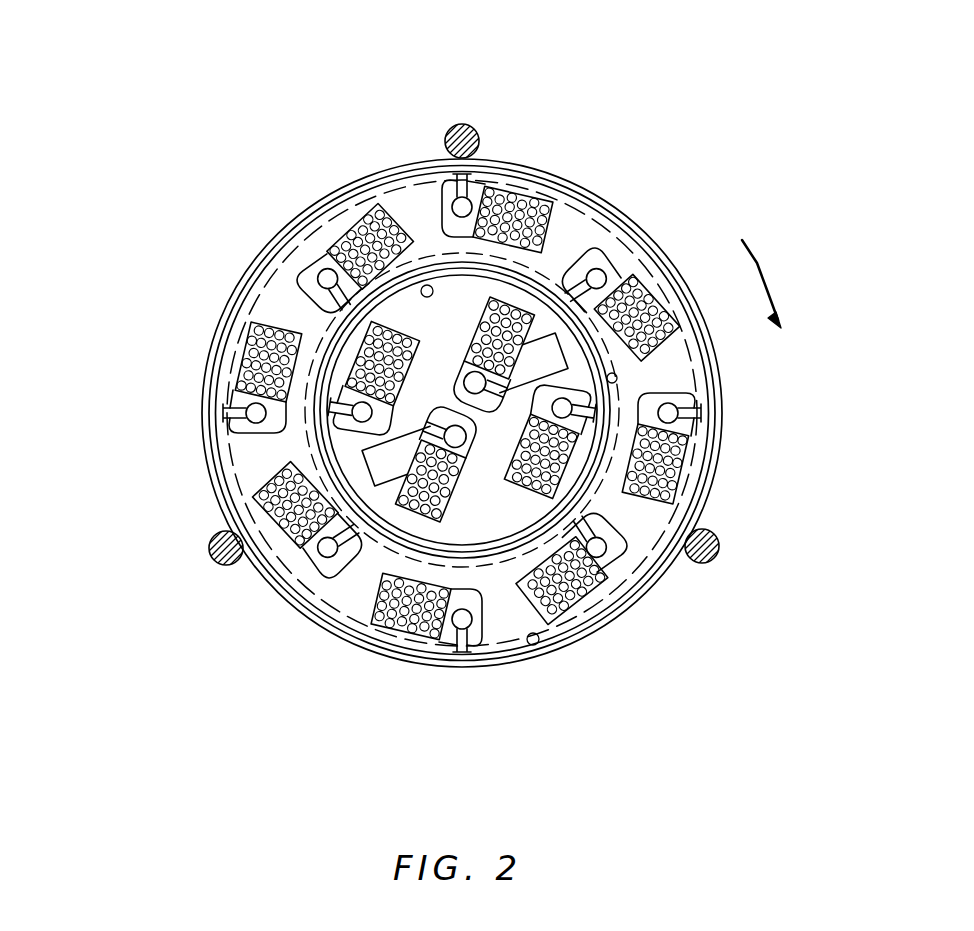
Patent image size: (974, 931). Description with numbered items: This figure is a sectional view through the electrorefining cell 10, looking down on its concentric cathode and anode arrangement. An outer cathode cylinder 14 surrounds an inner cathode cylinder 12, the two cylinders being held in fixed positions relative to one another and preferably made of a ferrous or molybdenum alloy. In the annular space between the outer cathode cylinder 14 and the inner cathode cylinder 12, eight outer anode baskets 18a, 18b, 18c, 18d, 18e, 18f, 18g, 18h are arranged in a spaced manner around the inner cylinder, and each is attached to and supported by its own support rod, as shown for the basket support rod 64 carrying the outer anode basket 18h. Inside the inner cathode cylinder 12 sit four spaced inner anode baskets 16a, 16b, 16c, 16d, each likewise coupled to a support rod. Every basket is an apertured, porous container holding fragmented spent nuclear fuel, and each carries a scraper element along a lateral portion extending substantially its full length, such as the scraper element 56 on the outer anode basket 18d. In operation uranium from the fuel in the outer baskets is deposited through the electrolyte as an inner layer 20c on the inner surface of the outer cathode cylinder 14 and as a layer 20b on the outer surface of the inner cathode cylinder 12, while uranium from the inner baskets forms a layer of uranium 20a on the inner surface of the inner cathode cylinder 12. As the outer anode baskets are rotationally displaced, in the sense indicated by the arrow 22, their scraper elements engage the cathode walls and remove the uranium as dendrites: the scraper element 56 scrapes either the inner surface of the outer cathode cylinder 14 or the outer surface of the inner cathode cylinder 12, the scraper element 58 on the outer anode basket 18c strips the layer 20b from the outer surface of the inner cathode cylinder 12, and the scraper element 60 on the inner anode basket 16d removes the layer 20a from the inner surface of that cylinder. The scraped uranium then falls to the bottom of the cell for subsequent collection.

The brushless motor 10 is at (536, 464).
The inner cathode cylinder 12 is at (464, 530).
The outer cathode cylinder 14 is at (545, 413).
The inner anode basket 16a is at (627, 237).
The inner anode basket 16b is at (686, 524).
The inner anode basket 16c is at (316, 560).
The inner anode basket 16d is at (238, 348).
The outer anode basket 18a is at (306, 190).
The outer anode basket 18b is at (541, 139).
The outer anode basket 18c is at (716, 267).
The outer anode basket 18d is at (769, 457).
The outer anode basket 18e is at (668, 619).
The outer anode basket 18f is at (361, 680).
The outer anode basket 18g is at (226, 566).
The outer anode basket 18h is at (171, 344).
The layer of uranium 20a is at (447, 161).
The layer 20b is at (771, 360).
The inner layer 20c is at (646, 710).
The direction of rotation 22 is at (827, 284).
The scraper element 56 is at (795, 427).
The scraper element 58 is at (651, 261).
The scraper element 60 is at (204, 463).
The basket support rod 64 is at (145, 382).